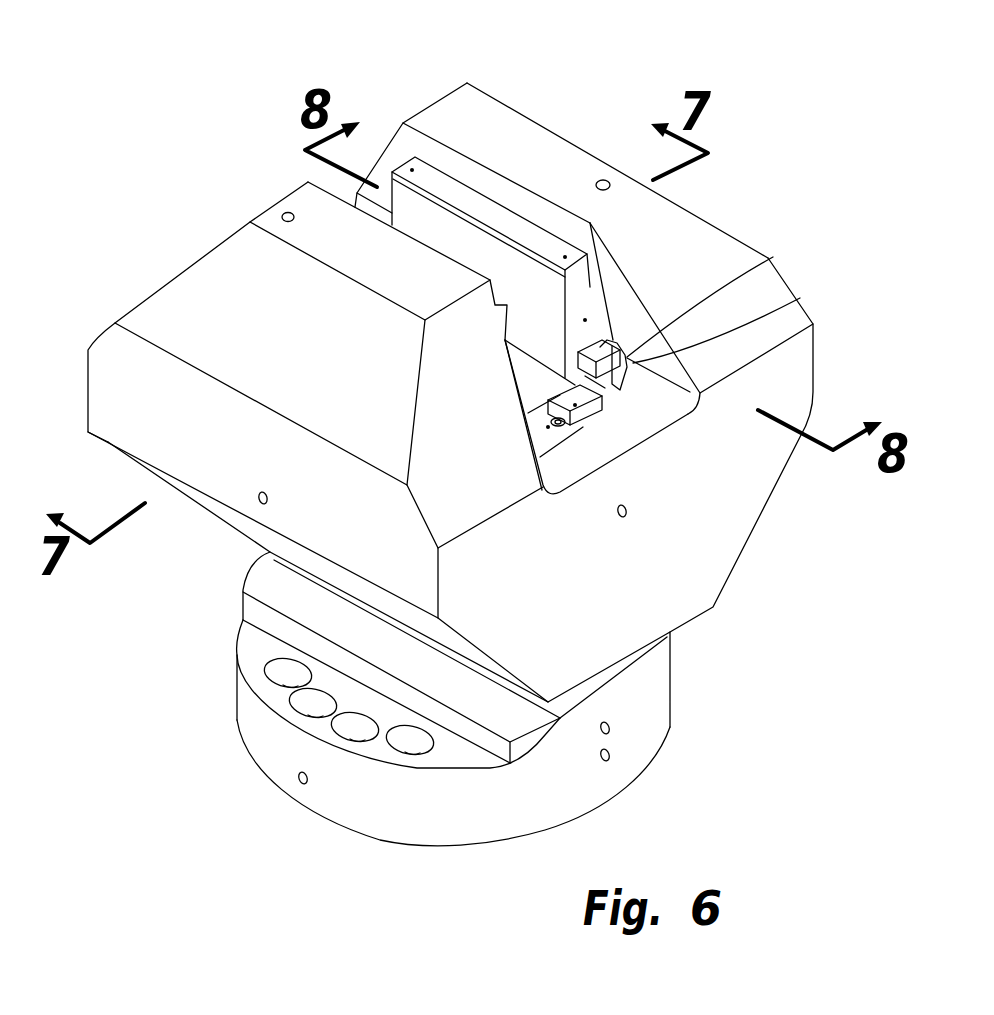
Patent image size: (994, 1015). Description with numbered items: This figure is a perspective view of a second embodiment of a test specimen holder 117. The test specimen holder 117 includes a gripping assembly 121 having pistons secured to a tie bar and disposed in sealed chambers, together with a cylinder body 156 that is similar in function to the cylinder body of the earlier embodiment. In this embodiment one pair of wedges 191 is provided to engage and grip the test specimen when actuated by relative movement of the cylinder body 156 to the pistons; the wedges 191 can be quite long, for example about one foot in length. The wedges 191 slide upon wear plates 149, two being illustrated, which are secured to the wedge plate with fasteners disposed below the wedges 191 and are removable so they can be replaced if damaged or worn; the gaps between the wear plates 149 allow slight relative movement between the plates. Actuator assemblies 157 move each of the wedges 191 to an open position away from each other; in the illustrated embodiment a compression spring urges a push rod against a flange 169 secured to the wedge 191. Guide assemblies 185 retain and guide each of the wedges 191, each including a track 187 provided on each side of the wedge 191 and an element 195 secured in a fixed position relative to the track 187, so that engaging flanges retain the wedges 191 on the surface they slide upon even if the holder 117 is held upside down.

The test specimen holder 117 is at (571, 108).
The gripping assembly 121 is at (470, 162).
The wedges 191 is at (396, 136).
The cylinder body 156 is at (733, 225).
The flange 169 is at (773, 257).
The track 187 is at (803, 297).
The wear plates 149 is at (587, 380).
The guide assemblies 185 is at (595, 322).
The element 195 is at (630, 393).
The actuator assemblies 157 is at (593, 455).